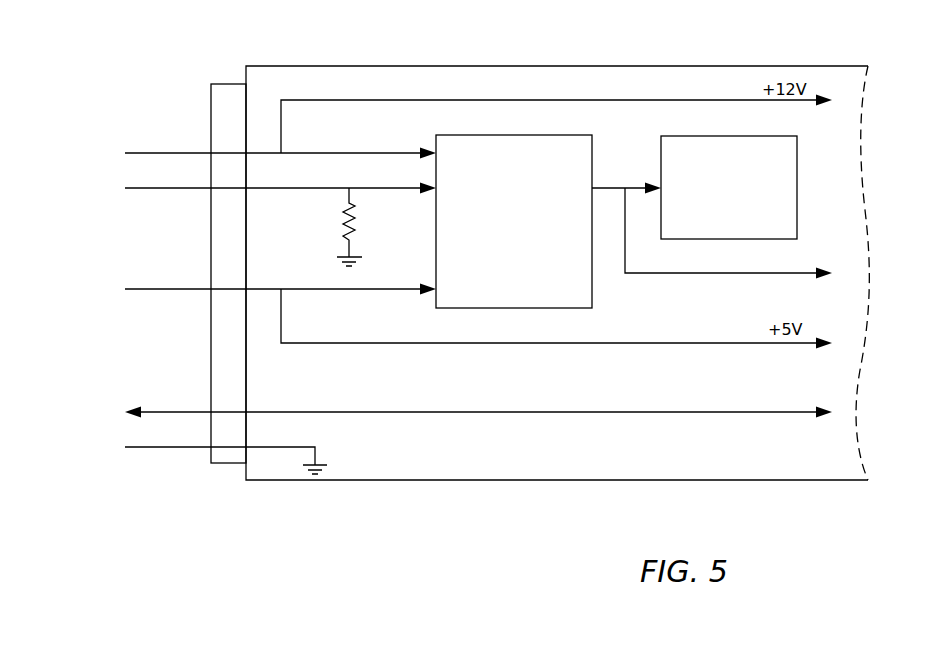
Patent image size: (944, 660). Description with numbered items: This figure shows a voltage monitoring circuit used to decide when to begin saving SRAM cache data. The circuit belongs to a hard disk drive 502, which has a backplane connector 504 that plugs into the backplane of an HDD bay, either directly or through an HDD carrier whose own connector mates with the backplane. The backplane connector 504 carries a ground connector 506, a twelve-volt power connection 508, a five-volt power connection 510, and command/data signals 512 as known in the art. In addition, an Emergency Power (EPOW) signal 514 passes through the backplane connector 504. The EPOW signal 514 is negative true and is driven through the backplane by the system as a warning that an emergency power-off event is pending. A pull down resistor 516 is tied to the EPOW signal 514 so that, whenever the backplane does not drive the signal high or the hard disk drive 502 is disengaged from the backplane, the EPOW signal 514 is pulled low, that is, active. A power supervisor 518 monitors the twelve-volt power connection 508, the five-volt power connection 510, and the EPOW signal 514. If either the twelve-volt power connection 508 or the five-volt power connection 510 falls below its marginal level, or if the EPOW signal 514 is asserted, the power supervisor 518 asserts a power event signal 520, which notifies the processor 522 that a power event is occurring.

The hard disk drive 502 is at (263, 65).
The backplane connector 504 is at (222, 83).
The ground connector 506 is at (118, 447).
The +12 volt power connection 508 is at (118, 153).
The +5 volt power connection 510 is at (118, 289).
The command/data signals 512 is at (118, 412).
The EPOW signal 514 is at (118, 188).
The pull down resistor 516 is at (338, 224).
The power supervisor 518 is at (435, 138).
The power event signal 520 is at (629, 184).
The processor 522 is at (660, 137).